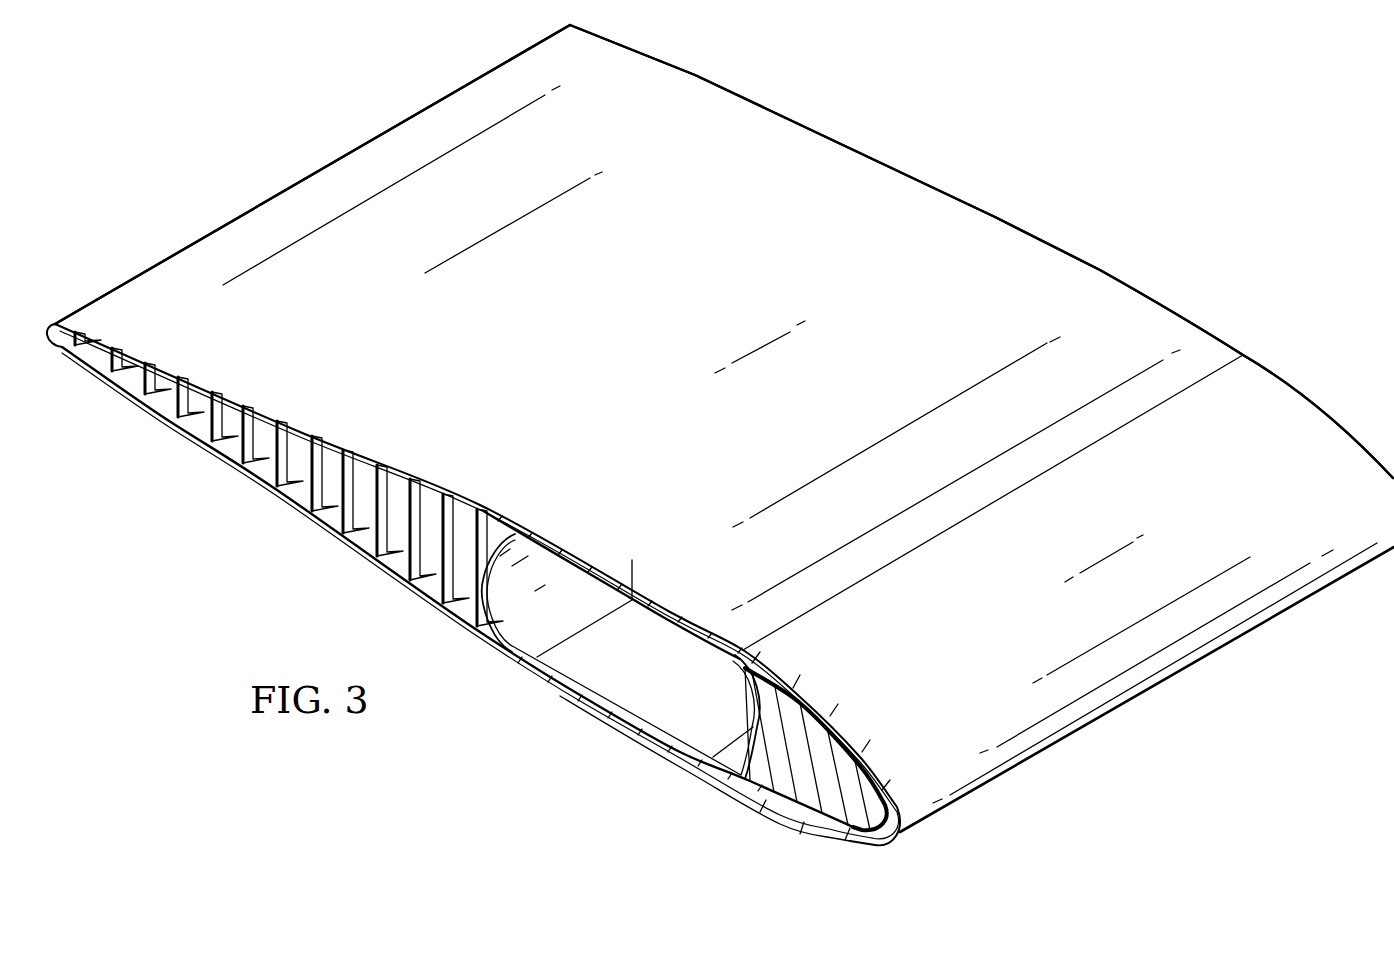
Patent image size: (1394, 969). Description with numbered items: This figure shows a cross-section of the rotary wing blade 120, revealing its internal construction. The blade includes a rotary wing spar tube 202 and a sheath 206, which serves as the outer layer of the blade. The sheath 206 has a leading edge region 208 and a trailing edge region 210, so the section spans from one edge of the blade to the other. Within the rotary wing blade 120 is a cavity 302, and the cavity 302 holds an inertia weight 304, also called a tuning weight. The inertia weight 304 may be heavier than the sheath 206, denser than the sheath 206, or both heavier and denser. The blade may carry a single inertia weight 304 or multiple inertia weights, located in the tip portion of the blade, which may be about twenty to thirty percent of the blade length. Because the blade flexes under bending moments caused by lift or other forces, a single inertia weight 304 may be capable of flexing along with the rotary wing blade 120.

The rotary wing blade 120 is at (1125, 158).
The rotary wing spar tube 202 is at (617, 692).
The sheath 206 is at (950, 198).
The leading edge region 208 is at (1101, 719).
The trailing edge region 210 is at (256, 207).
The cavity 302 is at (873, 842).
The inertia weight 304 is at (840, 760).